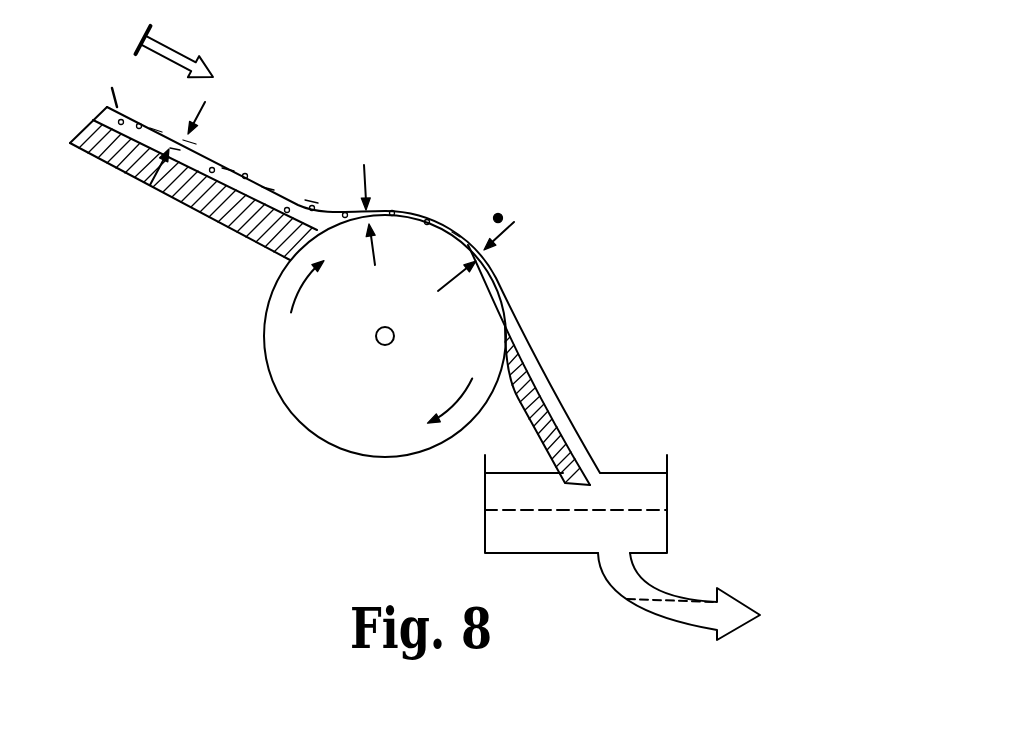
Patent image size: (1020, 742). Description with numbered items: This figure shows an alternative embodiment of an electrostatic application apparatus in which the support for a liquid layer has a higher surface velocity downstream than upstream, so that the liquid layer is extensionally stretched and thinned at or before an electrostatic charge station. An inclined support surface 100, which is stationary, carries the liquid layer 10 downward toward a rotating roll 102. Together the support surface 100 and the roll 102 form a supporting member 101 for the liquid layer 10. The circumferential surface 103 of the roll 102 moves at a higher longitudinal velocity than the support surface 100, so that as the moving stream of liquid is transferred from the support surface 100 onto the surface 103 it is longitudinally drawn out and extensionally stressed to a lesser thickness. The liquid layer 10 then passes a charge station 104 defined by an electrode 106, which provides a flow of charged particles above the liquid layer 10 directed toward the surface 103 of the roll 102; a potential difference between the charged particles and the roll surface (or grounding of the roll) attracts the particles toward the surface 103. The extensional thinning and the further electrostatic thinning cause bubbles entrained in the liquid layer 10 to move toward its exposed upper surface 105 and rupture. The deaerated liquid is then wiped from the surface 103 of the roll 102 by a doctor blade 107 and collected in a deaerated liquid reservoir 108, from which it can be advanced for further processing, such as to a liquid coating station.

The liquid layer 10 is at (92, 101).
The inclined support surface 100 is at (233, 180).
The supporting member 101 is at (246, 283).
The rotating roll 102 is at (271, 408).
The circumferential surface 103 is at (382, 210).
The charge station 104 is at (479, 196).
The exposed upper surface 105 is at (402, 211).
The electrode 106 is at (500, 216).
The doctor blade 107 is at (527, 398).
The deaerated liquid reservoir 108 is at (667, 496).